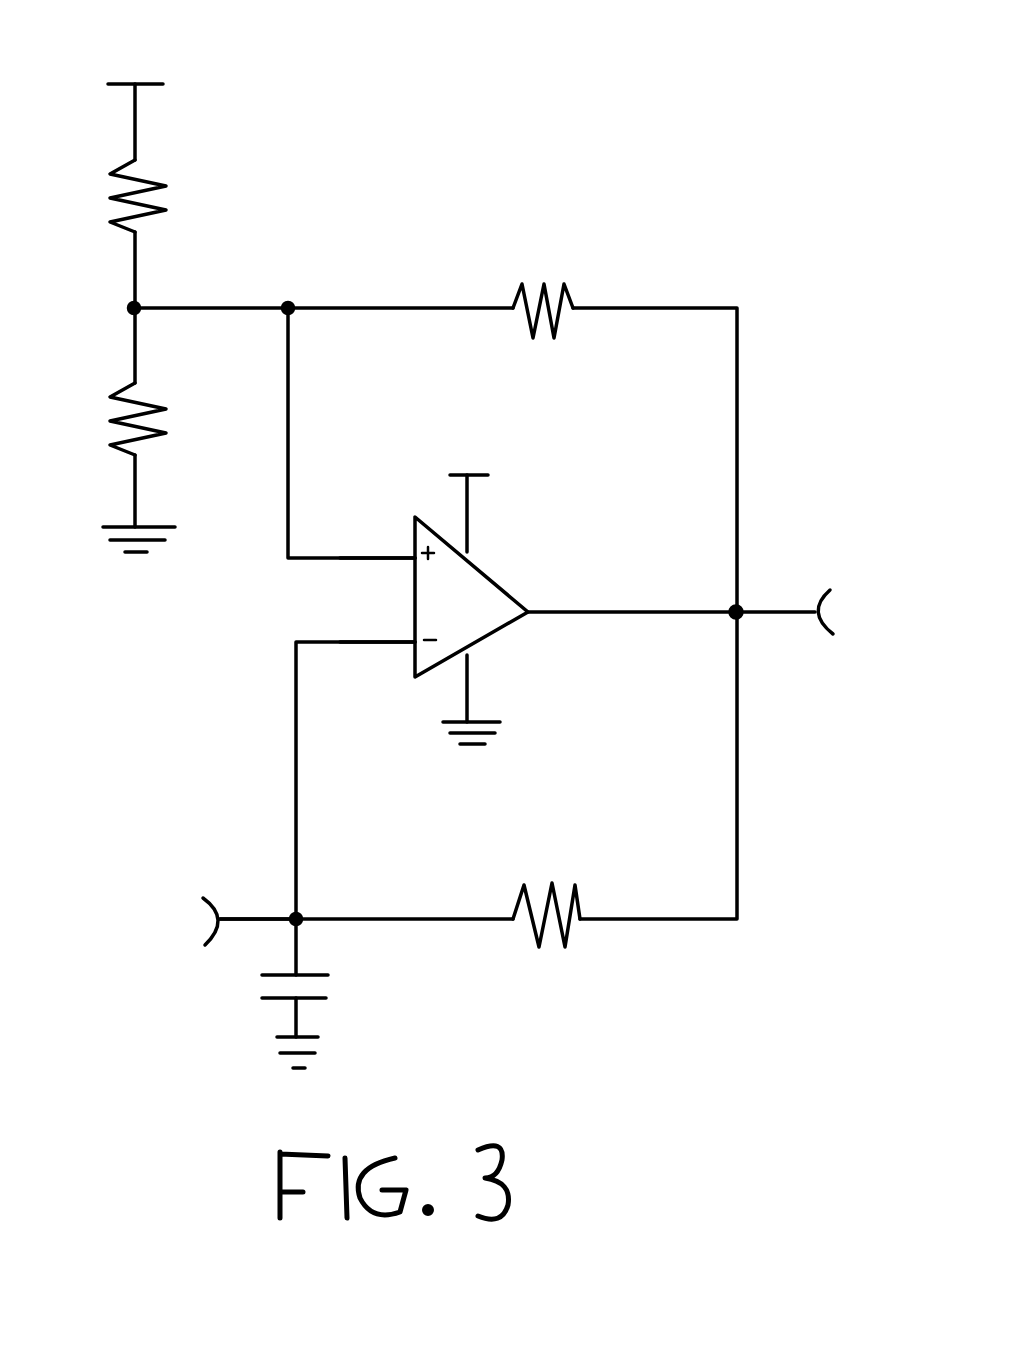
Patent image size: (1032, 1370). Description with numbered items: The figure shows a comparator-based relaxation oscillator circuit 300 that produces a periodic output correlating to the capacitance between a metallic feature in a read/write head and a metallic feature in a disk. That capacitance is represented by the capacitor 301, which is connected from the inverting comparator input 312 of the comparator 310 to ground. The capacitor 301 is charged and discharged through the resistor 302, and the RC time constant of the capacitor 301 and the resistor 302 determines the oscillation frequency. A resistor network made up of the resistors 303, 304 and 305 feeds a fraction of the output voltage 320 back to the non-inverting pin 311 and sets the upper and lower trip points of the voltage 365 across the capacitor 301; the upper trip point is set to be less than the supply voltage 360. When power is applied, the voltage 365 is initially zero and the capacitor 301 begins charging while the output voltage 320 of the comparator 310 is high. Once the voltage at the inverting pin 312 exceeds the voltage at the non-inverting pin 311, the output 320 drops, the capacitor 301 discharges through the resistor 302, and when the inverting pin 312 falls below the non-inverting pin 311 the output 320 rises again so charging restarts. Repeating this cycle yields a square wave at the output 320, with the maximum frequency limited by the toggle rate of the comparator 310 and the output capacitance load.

The comparator-based relaxation oscillator circuit 300 is at (776, 227).
The capacitor 301 is at (342, 965).
The resistor 302 is at (590, 958).
The resistor 303 is at (86, 440).
The resistor 304 is at (88, 220).
The resistor 305 is at (580, 276).
The comparator 310 is at (511, 567).
The non-inverting pin 311 is at (407, 536).
The inverting comparator input 312 is at (405, 666).
The output voltage 320 is at (853, 607).
The supply voltage 360 is at (190, 68).
The voltage across capacitor 365 is at (188, 950).